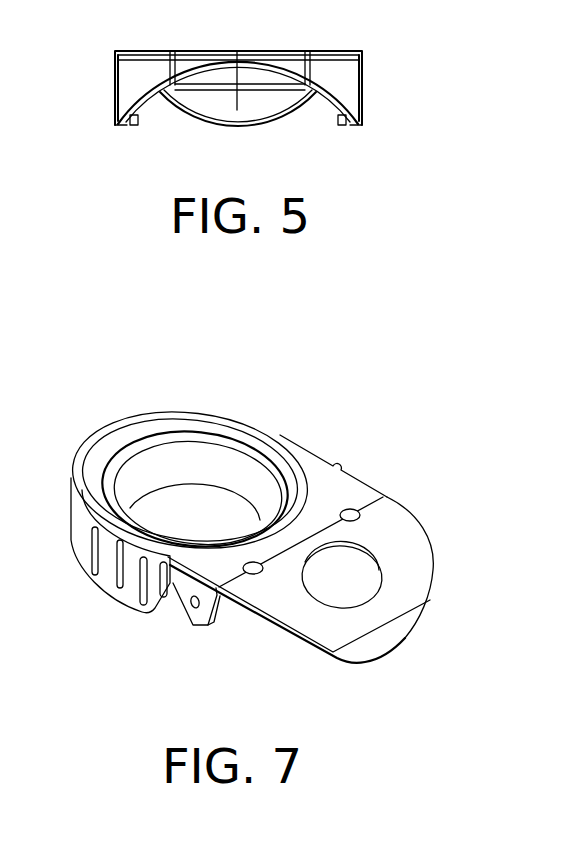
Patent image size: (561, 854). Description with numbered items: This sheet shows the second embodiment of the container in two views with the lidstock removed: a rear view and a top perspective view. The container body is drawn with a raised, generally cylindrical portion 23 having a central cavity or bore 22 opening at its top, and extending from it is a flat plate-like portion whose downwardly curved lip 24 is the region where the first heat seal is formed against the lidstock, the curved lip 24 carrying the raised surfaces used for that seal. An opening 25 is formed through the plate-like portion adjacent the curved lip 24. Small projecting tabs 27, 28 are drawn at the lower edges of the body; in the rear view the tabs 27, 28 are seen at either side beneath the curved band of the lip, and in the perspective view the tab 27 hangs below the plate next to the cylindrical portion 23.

In FIG. 7, the lens bore / cavity 22 is at (195, 490).
In FIG. 7, the ring body (lens holder rim) 23 is at (290, 463).
In FIG. 7, the curved lip 24 is at (407, 567).
In FIG. 7, the large mounting hole 25 is at (357, 592).
In FIG. 5, the mounting tab 27 is at (341, 123).
In FIG. 7, the mounting tab 27 is at (197, 613).
In FIG. 5, the mounting tab 28 is at (133, 123).